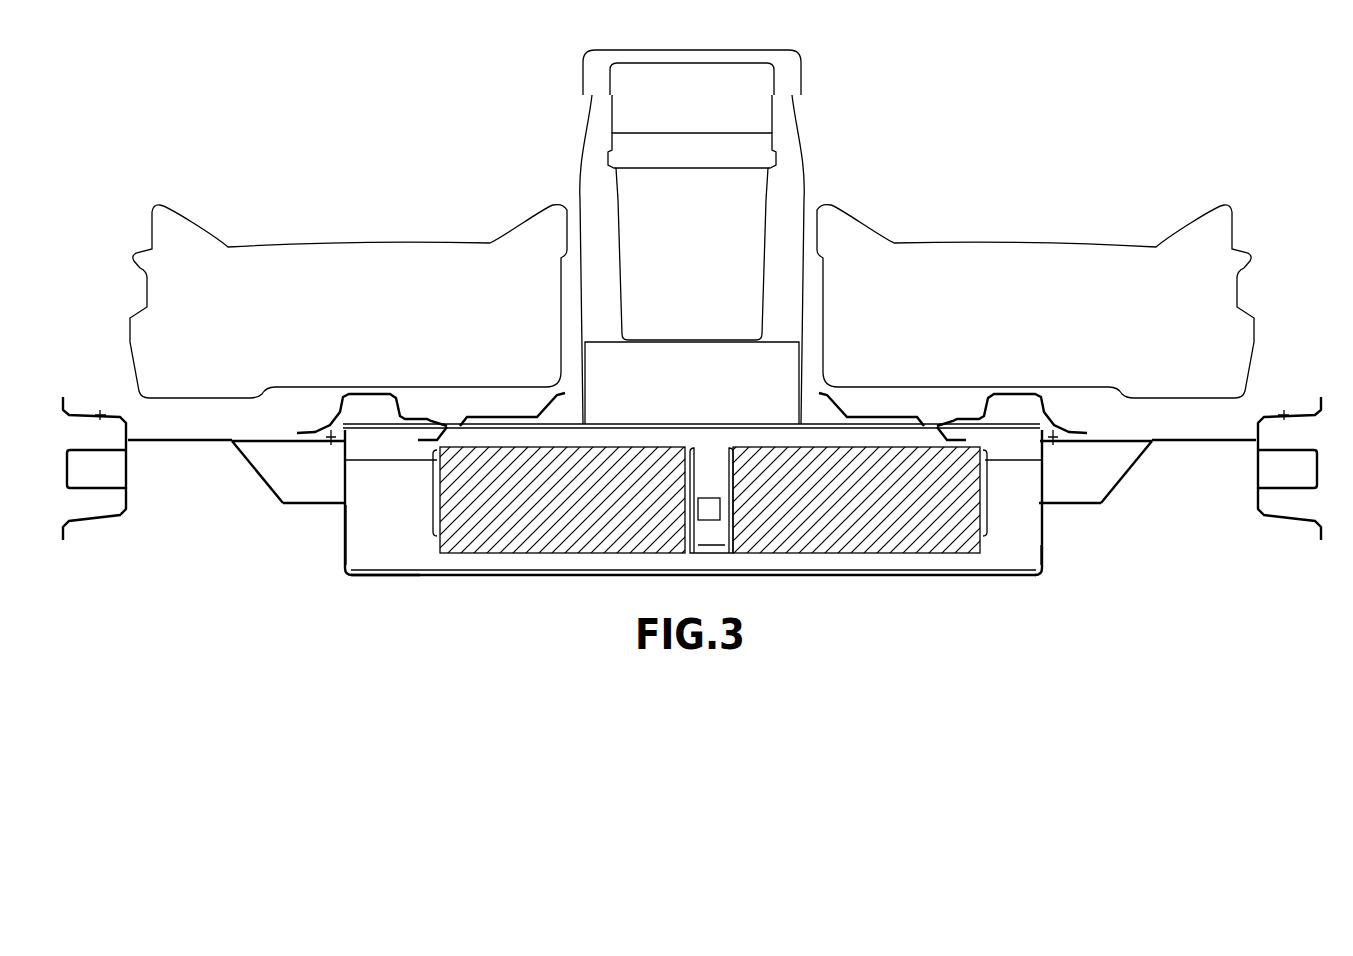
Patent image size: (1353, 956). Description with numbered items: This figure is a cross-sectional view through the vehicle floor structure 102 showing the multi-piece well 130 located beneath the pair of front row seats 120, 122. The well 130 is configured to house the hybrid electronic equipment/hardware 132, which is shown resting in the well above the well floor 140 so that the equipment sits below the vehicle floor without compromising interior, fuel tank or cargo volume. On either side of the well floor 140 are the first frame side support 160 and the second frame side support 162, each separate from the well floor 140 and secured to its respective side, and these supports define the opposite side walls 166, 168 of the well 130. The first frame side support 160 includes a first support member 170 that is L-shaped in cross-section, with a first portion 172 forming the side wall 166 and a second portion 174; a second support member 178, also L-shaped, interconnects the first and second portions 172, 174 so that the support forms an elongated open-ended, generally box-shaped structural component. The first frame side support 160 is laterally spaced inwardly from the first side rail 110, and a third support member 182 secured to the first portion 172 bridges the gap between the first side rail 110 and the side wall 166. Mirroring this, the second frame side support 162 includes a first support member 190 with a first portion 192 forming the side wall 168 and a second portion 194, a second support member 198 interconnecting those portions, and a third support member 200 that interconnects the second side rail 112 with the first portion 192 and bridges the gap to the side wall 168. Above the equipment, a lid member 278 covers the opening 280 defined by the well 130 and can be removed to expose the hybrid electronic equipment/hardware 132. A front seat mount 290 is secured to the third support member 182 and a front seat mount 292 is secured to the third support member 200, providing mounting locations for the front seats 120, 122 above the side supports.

The vehicle floor structure 102 is at (679, 518).
The first side rail 110 is at (1289, 530).
The second side rail 112 is at (99, 530).
The front row seat 120 is at (1030, 265).
The front row seat 122 is at (360, 270).
The multi-piece well 130 is at (679, 519).
The hybrid electronic equipment/hardware 132 is at (407, 547).
The well floor 140 is at (812, 577).
The first frame side support 160 is at (1147, 516).
The second frame side support 162 is at (236, 456).
The side wall 166 is at (1042, 532).
The side wall 168 is at (345, 480).
The first support member 170 is at (1043, 548).
The first portion 172 is at (1044, 538).
The second portion 174 is at (1110, 438).
The second support member 178 is at (1127, 475).
The third support member 182 is at (1203, 442).
The first support member 190 is at (343, 523).
The first portion 192 is at (347, 518).
The second portion 194 is at (277, 438).
The second support member 198 is at (253, 466).
The third support member 200 is at (187, 441).
The lid member 278 is at (655, 424).
The opening 280 is at (718, 425).
The front seat mount 290 is at (1020, 395).
The front seat mount 292 is at (370, 395).